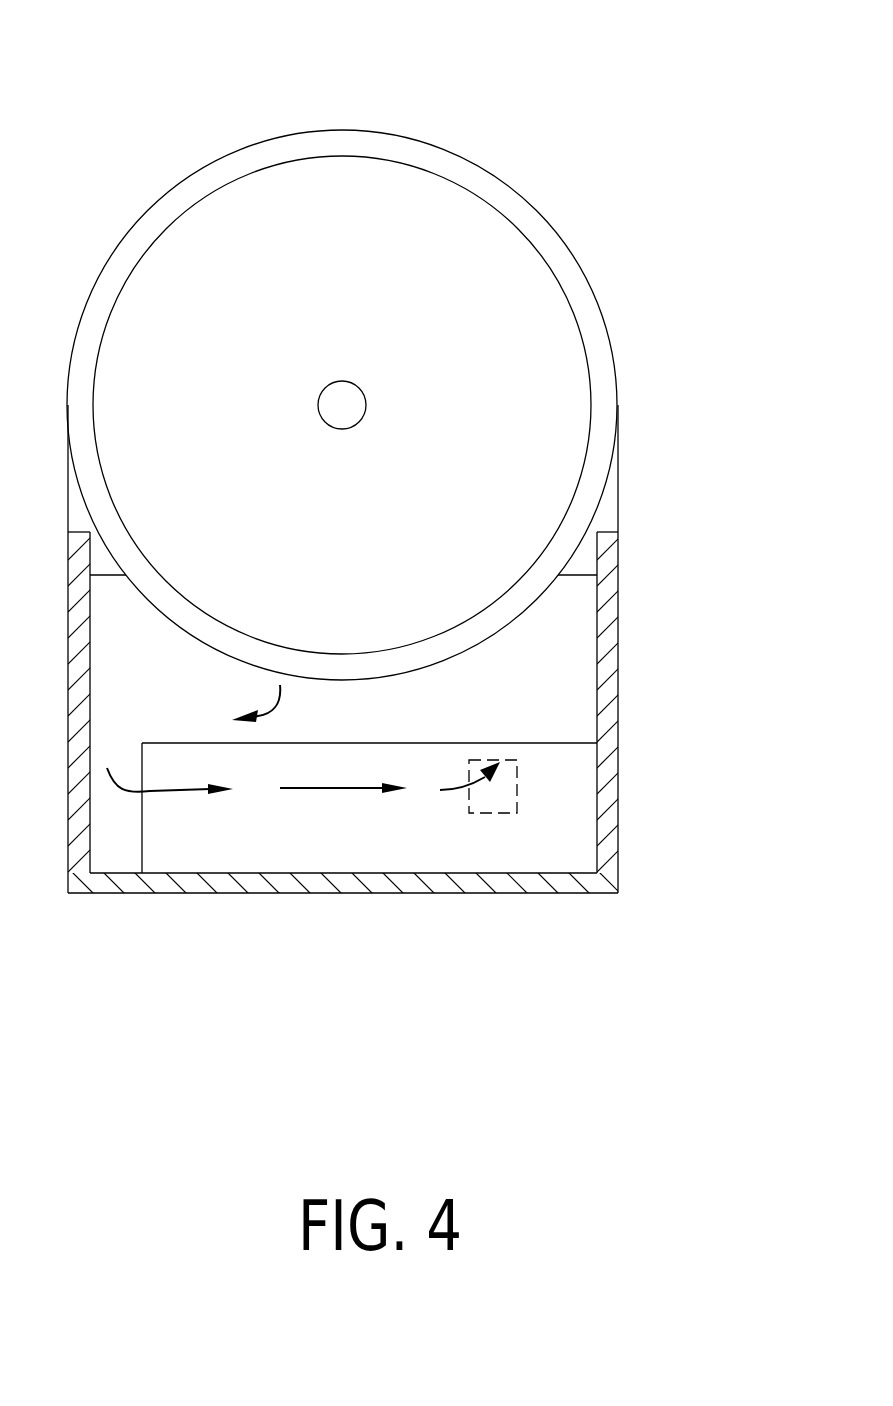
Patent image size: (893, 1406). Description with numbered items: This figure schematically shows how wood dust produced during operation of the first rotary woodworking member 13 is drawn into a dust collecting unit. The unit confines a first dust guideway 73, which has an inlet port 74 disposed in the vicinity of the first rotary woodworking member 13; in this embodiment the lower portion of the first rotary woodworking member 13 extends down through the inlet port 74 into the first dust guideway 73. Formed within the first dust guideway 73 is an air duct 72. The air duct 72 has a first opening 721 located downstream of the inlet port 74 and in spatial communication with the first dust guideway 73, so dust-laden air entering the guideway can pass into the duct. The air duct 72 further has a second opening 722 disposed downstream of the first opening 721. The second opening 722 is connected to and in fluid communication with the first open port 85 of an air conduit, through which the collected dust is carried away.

The first rotary woodworking member 13 is at (478, 242).
The inlet port 74 is at (587, 562).
The first dust guideway 73 is at (570, 633).
The air duct 72 is at (365, 830).
The first opening 721 is at (140, 808).
The second opening 722 is at (517, 790).
The first open port 85 is at (498, 805).